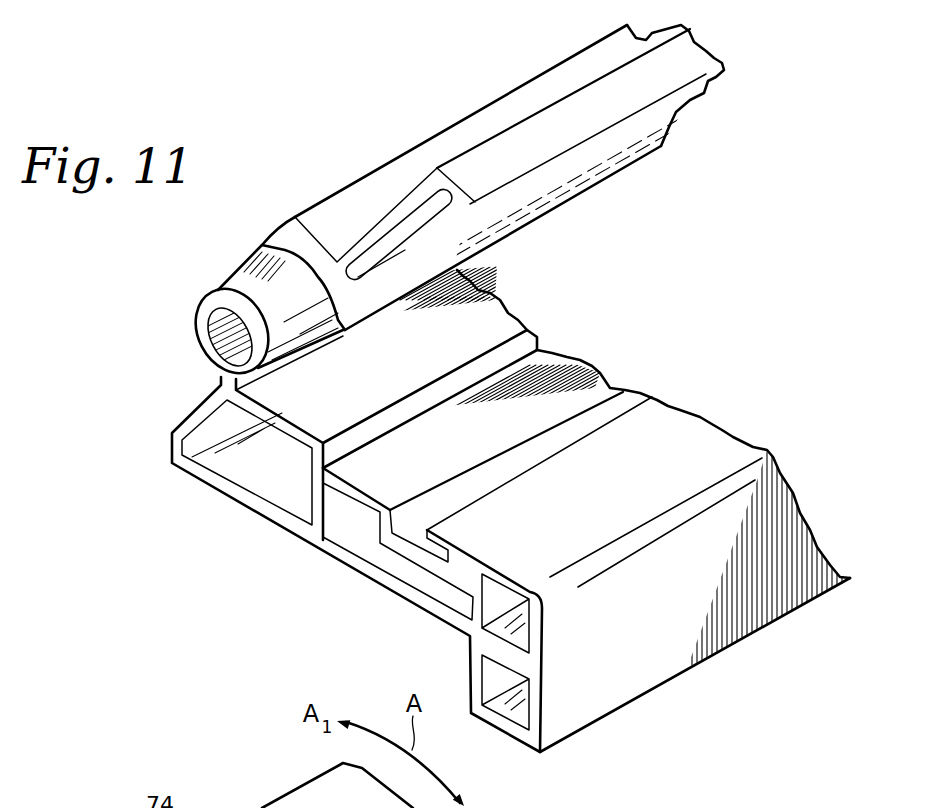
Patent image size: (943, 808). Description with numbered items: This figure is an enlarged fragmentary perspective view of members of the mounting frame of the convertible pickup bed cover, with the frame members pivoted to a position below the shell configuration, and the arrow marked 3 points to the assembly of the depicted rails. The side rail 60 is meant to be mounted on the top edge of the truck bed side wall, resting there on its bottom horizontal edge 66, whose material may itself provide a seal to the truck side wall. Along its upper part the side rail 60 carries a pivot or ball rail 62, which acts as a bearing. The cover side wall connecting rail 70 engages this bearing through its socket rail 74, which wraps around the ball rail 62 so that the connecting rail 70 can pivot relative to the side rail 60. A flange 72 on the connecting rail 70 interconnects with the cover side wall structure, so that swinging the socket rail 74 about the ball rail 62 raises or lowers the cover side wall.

The frame assembly 3 is at (230, 504).
The side rail 60 is at (795, 525).
The pivot or ball rail 62 is at (218, 285).
The bottom horizontal edge 66 is at (490, 730).
The cover side wall connecting rail 70 is at (502, 104).
The flange 72 is at (397, 203).
The socket rail 74 is at (257, 264).